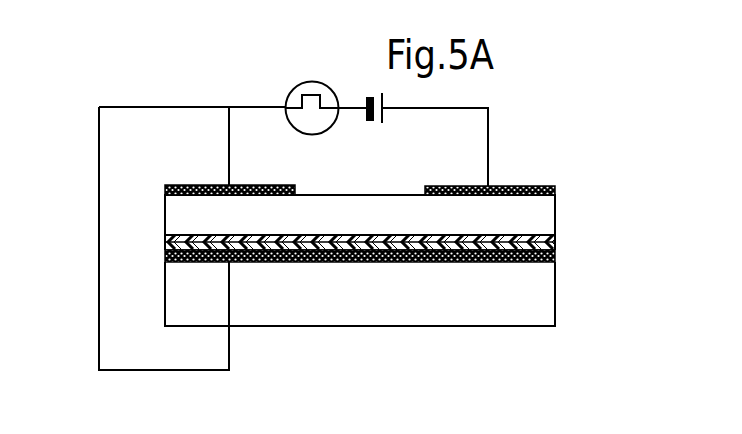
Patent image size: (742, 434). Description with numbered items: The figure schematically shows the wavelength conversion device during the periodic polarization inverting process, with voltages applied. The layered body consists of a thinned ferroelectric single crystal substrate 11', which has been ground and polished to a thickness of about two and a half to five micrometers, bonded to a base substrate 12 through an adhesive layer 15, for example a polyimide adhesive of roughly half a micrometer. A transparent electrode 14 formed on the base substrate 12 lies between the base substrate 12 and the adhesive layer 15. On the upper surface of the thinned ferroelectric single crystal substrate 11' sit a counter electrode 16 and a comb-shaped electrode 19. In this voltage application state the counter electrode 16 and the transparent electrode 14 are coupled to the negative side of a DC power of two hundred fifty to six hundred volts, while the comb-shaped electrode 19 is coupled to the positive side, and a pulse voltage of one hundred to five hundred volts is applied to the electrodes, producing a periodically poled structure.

The counter electrode 16 is at (198, 185).
The comb-shaped electrode 19 is at (517, 186).
The thinned ferroelectric single crystal substrate 11' is at (423, 195).
The adhesive layer 15 is at (556, 248).
The transparent electrode 14 is at (555, 258).
The base substrate 12 is at (540, 320).